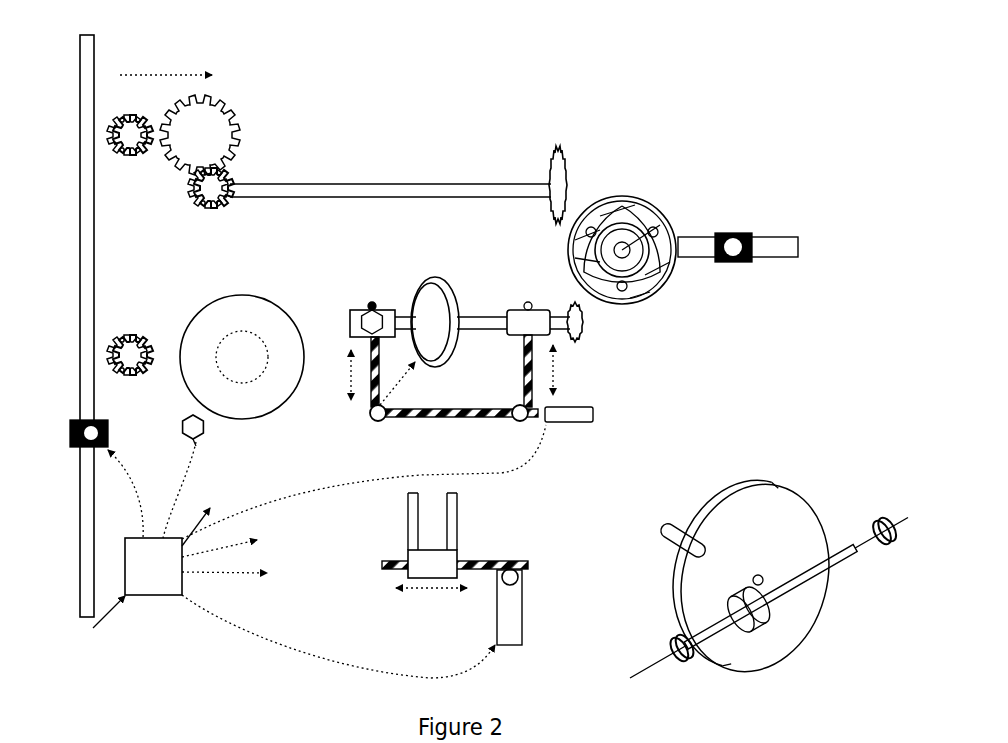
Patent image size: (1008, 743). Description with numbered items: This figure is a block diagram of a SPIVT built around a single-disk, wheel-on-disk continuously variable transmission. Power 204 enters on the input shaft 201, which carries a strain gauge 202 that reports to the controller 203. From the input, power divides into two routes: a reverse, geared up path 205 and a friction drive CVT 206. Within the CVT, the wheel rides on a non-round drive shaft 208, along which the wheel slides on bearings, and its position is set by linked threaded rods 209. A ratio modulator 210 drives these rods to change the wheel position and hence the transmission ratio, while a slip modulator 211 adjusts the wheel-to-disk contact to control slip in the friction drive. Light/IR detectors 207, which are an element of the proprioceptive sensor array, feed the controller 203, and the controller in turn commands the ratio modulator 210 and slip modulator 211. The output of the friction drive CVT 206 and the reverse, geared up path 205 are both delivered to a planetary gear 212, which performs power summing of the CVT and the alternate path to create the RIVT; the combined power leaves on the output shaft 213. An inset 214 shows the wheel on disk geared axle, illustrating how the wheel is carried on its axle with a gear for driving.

The input shaft 201 is at (59, 326).
The strain gauge 202 is at (60, 435).
The controller 203 is at (319, 551).
The power 204 is at (173, 125).
The reverse, geared up path 205 is at (398, 180).
The friction drive CVT 206 is at (270, 385).
The light/IR detectors 207 is at (183, 420).
The non-round drive shaft 208 is at (403, 312).
The linked threaded rods 209 is at (530, 392).
The ratio modulator 210 is at (455, 569).
The slip modulator 211 is at (553, 430).
The planetary gear 212 is at (647, 303).
The output shaft 213 is at (741, 229).
The inset—wheel on disk geared axle 214 is at (769, 580).